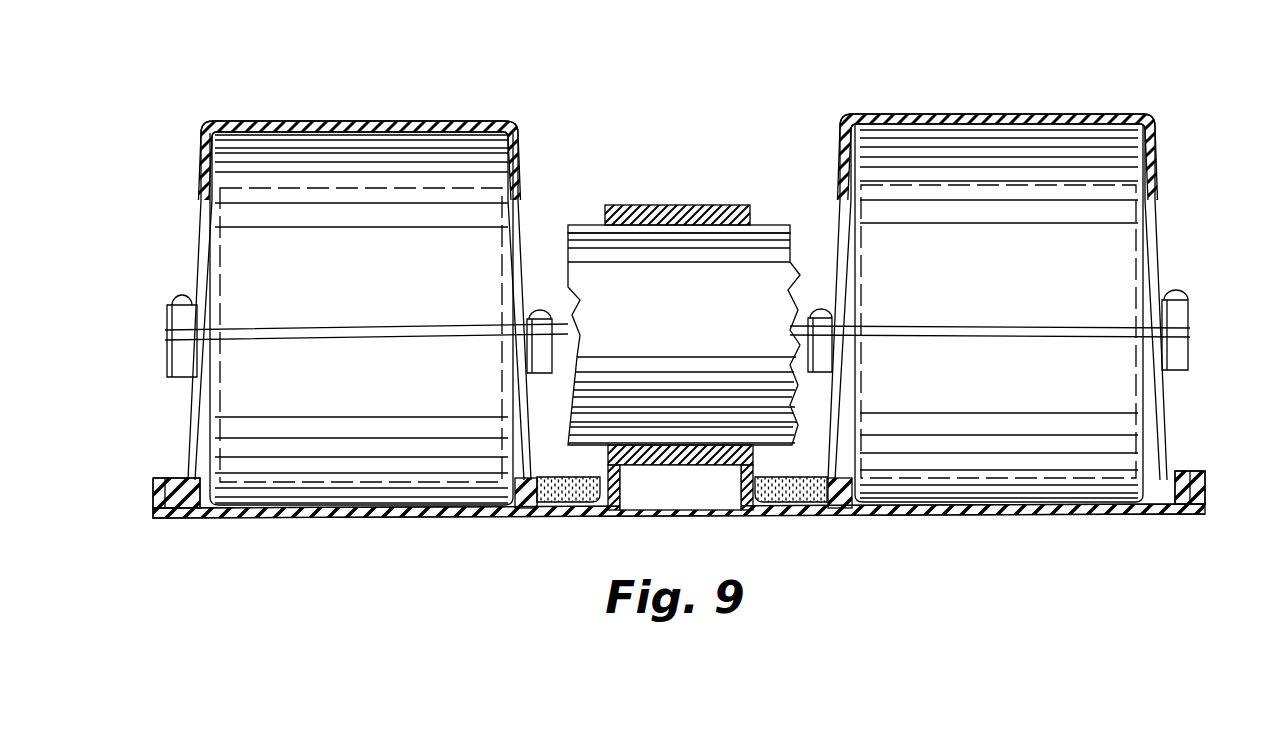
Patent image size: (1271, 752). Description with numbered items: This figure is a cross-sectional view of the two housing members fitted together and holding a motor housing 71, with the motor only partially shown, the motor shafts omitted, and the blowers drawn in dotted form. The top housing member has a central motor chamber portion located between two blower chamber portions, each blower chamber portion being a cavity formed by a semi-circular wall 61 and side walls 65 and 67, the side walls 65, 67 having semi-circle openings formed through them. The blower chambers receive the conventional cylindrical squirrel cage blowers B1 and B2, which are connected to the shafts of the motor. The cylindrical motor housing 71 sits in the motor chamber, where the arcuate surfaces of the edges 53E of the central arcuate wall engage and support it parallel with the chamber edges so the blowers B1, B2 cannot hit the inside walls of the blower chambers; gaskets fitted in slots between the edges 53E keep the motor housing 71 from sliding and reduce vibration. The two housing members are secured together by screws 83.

The semi-circular wall 61 is at (1036, 115).
The side wall 65 is at (1157, 160).
The side wall 67 is at (840, 150).
The squirrel cage blower B1 is at (403, 187).
The squirrel cage blower B2 is at (948, 183).
The arcuate edge 53E is at (750, 216).
The motor housing 71 is at (738, 405).
The screw 83 is at (1168, 290).